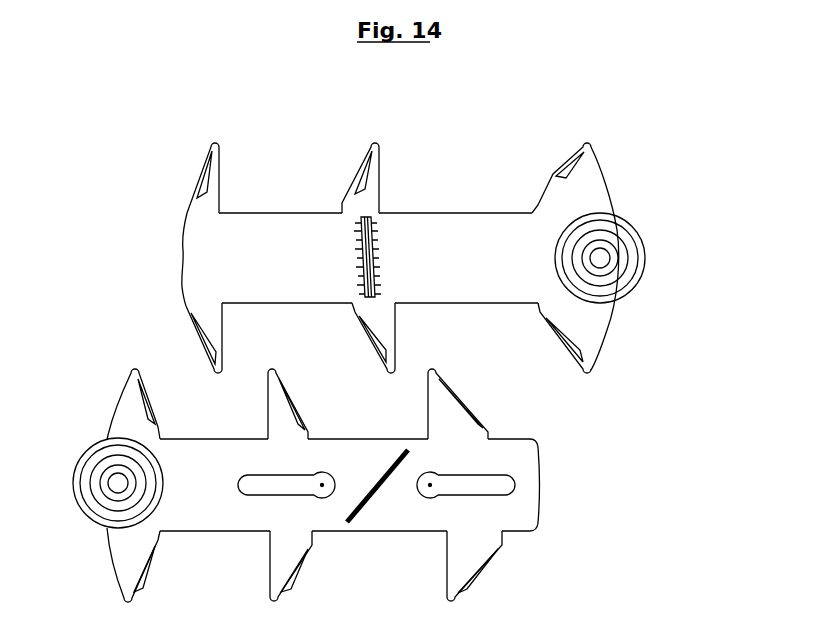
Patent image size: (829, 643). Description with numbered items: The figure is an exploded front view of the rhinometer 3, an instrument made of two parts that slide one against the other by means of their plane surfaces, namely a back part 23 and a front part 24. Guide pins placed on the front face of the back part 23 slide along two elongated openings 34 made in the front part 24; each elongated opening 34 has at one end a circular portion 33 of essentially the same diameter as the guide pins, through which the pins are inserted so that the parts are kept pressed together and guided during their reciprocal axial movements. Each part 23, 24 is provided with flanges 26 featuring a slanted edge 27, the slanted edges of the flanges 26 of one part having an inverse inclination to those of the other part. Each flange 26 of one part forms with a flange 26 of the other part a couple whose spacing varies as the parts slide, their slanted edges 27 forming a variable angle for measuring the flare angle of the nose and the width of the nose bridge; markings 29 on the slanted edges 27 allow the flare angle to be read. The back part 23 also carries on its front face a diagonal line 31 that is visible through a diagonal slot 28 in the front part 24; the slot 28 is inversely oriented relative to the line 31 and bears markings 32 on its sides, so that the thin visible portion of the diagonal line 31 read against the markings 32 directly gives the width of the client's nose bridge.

The rhinometer 3 is at (148, 306).
The back part 23 is at (97, 467).
The front part 24 is at (600, 203).
The flange 26 is at (213, 140).
The slanted edge 27 is at (186, 207).
The diagonal slot 28 is at (380, 212).
The markings 29 is at (205, 170).
The diagonal line 31 is at (387, 460).
The markings 32 is at (327, 225).
The circular portion 33 is at (428, 488).
The elongated opening 34 is at (250, 486).